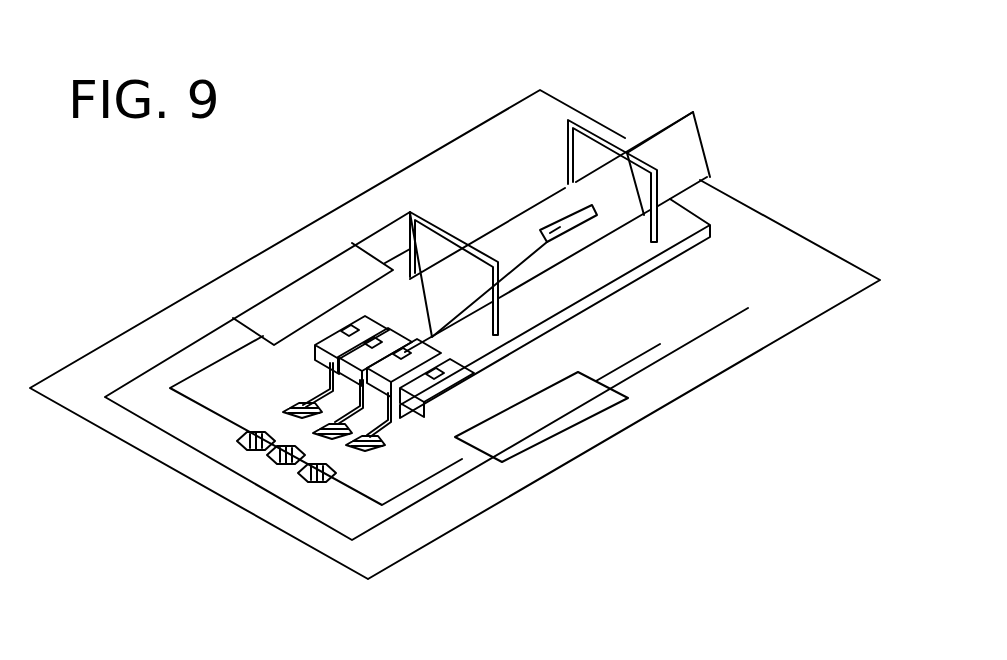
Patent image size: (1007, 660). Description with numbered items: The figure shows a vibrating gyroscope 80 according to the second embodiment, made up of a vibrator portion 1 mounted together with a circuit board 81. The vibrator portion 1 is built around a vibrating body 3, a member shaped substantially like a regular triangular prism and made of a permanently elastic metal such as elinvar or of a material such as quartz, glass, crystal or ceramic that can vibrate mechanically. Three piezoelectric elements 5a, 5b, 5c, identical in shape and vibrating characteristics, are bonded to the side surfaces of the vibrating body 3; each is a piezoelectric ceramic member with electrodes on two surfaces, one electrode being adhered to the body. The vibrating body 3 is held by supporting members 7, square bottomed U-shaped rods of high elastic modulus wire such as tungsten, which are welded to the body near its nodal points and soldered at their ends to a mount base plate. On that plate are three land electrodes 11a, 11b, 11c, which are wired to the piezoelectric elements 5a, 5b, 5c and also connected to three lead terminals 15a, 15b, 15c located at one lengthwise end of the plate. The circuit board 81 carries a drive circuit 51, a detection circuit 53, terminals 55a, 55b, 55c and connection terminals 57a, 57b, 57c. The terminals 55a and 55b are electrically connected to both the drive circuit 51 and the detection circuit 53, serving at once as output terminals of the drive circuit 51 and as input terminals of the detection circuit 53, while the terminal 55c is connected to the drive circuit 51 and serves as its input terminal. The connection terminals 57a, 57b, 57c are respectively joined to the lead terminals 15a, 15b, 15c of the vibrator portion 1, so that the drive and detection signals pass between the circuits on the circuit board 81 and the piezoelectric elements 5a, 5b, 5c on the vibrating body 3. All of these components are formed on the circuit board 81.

The vibrator portion 1 is at (770, 185).
The vibrating body 3 is at (690, 148).
The piezoelectric element 5a is at (504, 213).
The piezoelectric element 5b is at (570, 210).
The piezoelectric element 5c is at (585, 253).
The supporting member 7 is at (600, 127).
The land electrode 11a is at (353, 327).
The land electrode 11b is at (392, 352).
The land electrode 11c is at (405, 395).
The lead terminal 15a is at (320, 398).
The lead terminal 15b is at (340, 432).
The lead terminal 15c is at (372, 442).
The drive circuit 51 is at (597, 405).
The detection circuit 53 is at (332, 253).
The terminal 55a is at (247, 453).
The terminal 55b is at (283, 460).
The terminal 55c is at (315, 473).
The connection terminal 57a is at (297, 403).
The connection terminal 57b is at (352, 420).
The connection terminal 57c is at (390, 425).
The vibrating gyroscope 80 is at (408, 147).
The circuit board 81 is at (812, 322).